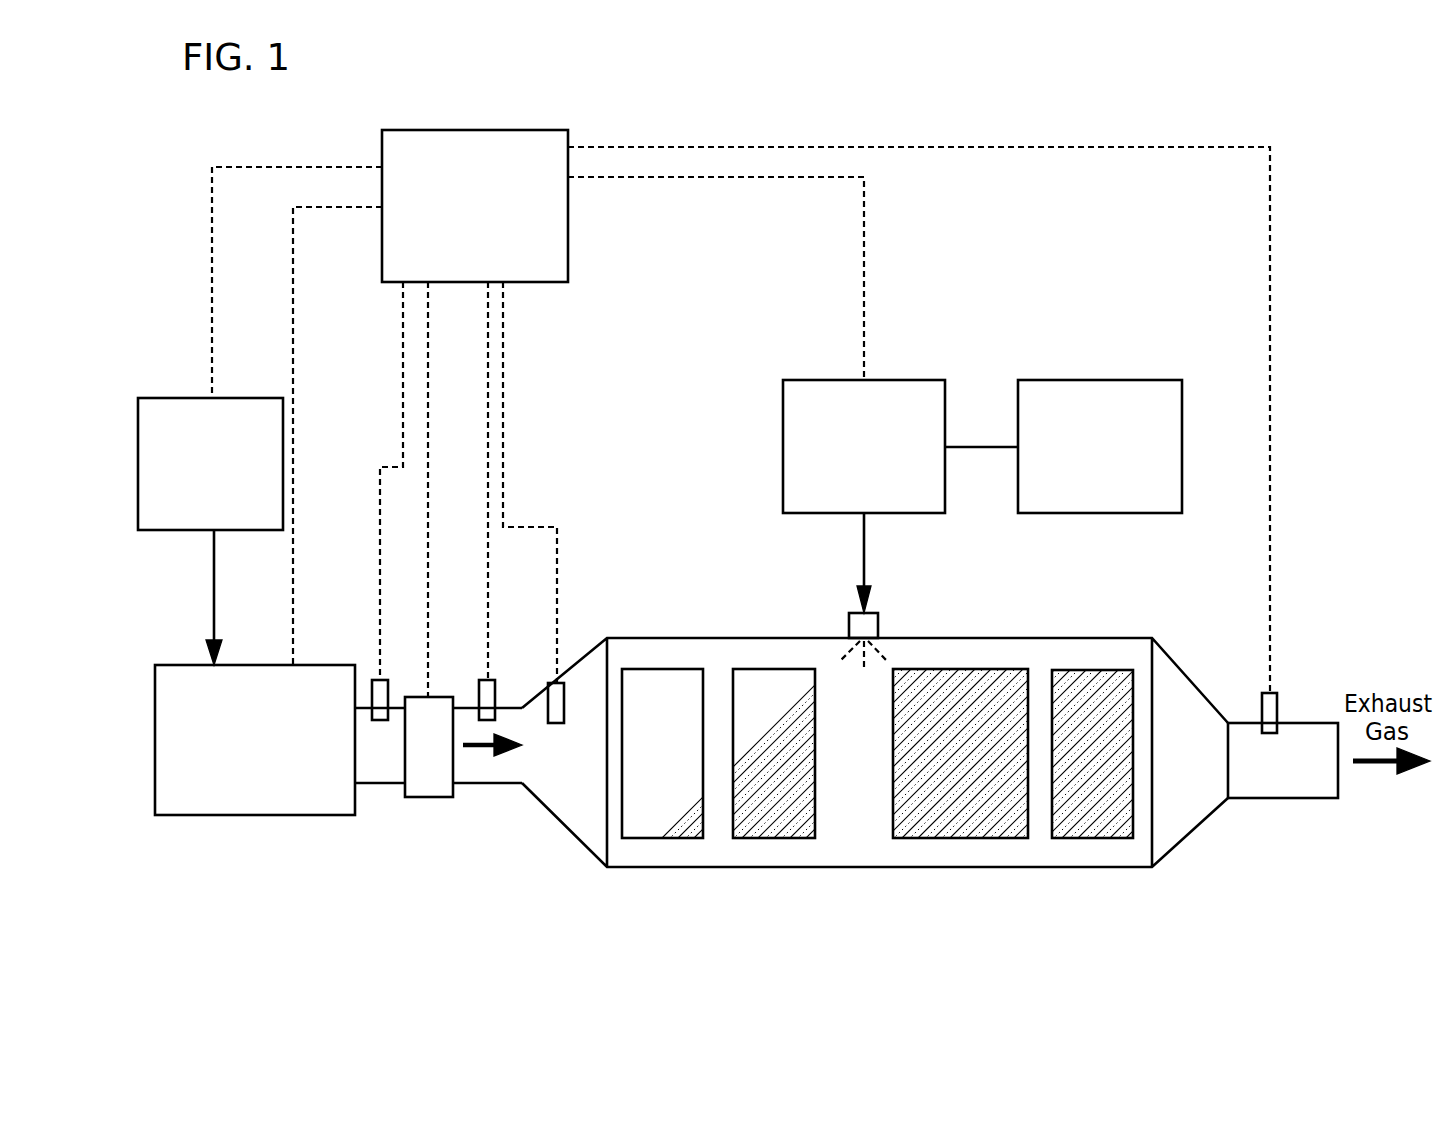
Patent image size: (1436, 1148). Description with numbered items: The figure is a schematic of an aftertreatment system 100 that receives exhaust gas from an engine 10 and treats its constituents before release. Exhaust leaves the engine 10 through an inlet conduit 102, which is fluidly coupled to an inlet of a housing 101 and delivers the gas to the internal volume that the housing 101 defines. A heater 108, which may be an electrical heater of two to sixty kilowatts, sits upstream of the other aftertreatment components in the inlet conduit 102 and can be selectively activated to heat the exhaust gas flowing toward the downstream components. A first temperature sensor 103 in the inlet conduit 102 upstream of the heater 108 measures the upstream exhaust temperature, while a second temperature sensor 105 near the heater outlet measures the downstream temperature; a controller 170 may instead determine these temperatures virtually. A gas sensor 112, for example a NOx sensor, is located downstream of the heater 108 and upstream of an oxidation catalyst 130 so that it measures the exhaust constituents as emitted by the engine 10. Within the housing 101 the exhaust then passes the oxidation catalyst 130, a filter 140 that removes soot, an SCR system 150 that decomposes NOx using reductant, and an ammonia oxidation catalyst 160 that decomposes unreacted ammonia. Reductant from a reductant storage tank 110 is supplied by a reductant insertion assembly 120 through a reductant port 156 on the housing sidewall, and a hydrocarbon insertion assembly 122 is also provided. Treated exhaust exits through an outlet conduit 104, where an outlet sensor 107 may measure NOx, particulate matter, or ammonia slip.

The aftertreatment system 100 is at (1308, 170).
The controller 170 is at (455, 232).
The hydrocarbon insertion assembly 122 is at (192, 519).
The reductant insertion assembly 120 is at (845, 501).
The reductant storage tank 110 is at (1080, 501).
The engine 10 is at (242, 767).
The inlet conduit 102 is at (377, 770).
The heater 108 is at (427, 777).
The first temperature sensor 103 is at (377, 683).
The second temperature sensor 105 is at (483, 683).
The gas sensor 112 is at (553, 692).
The housing 101 is at (793, 870).
The reductant port 156 is at (863, 623).
The oxidation catalyst 130 is at (652, 823).
The filter 140 is at (763, 823).
The SCR system 150 is at (927, 817).
The ammonia oxidation (AMOx) catalyst 160 is at (1082, 825).
The outlet conduit 104 is at (1300, 790).
The outlet sensor 107 is at (1273, 710).